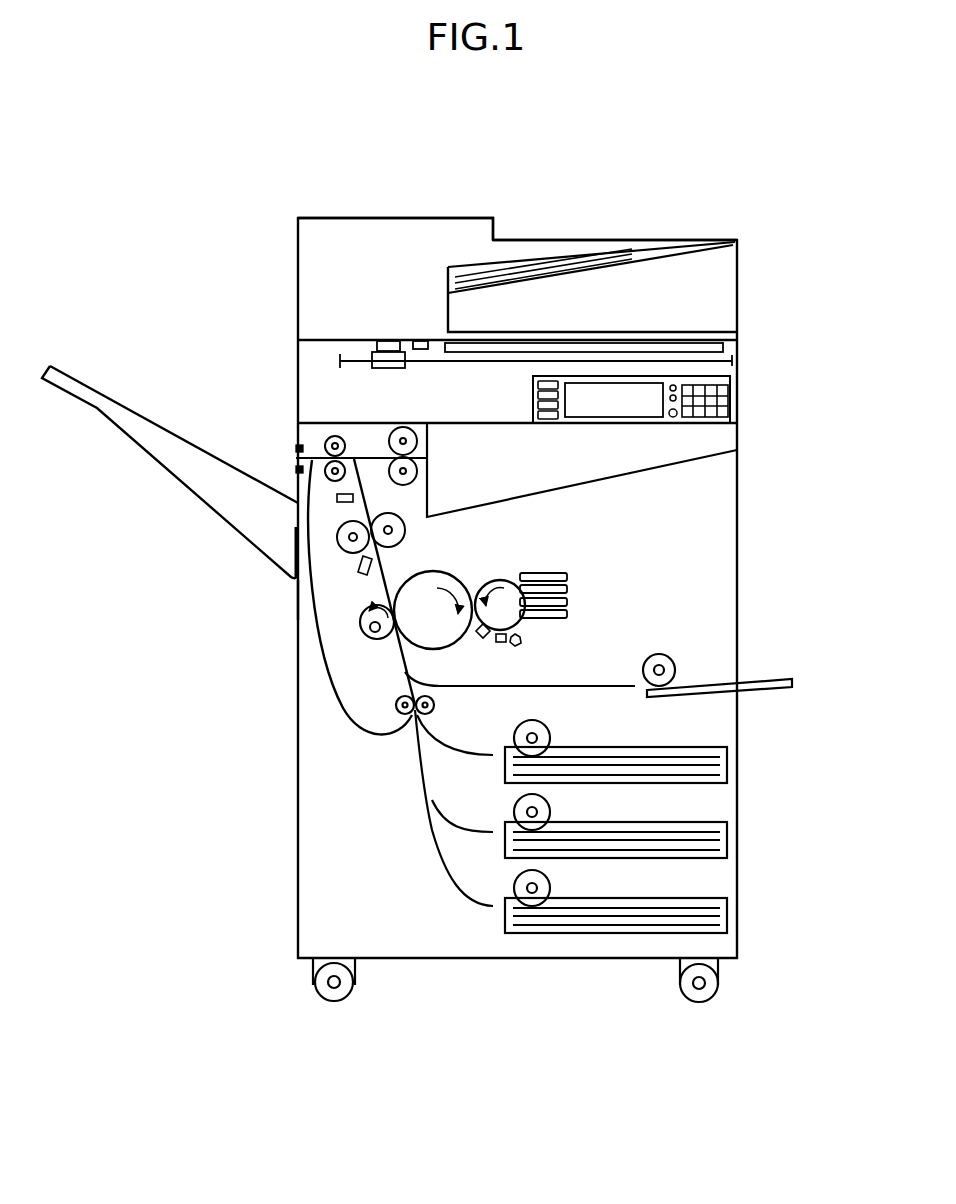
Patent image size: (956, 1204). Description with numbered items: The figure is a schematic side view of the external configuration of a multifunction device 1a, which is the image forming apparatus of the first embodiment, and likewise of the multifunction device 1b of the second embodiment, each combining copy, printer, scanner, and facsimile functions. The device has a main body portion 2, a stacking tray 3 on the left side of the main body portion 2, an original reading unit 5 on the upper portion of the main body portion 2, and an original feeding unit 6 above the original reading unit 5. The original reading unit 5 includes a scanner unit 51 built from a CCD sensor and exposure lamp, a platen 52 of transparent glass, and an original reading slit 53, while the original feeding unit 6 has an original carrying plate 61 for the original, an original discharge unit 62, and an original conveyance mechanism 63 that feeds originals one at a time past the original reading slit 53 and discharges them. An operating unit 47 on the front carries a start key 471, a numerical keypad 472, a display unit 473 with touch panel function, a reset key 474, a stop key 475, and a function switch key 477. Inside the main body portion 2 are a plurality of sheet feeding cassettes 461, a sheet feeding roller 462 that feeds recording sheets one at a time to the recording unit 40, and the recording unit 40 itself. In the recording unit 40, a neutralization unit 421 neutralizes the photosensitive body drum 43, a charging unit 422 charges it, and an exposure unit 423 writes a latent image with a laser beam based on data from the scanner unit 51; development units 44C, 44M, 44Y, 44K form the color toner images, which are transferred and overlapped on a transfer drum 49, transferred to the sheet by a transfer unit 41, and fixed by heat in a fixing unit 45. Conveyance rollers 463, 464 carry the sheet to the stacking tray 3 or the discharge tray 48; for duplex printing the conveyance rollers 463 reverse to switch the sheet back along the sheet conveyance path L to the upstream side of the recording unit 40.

The multifunction device 1a is at (157, 214).
The multifunction device 1b is at (443, 572).
The main body portion 2 is at (716, 601).
The stacking tray 3 is at (213, 523).
The original reading unit 5 is at (320, 368).
The original feeding unit 6 is at (550, 238).
The original carrying plate 61 is at (654, 244).
The original discharge unit 62 is at (669, 332).
The original conveyance mechanism 63 is at (379, 294).
The recording unit 40 is at (343, 611).
The transfer unit 41 is at (368, 637).
The photosensitive body drum 43 is at (511, 589).
The fixing unit 45 is at (355, 549).
The operating unit 47 is at (746, 403).
The discharge tray 48 is at (656, 484).
The transfer drum 49 is at (426, 583).
The scanner unit 51 is at (394, 369).
The platen 52 is at (725, 346).
The original reading slit 53 is at (385, 344).
The neutralization unit 421 is at (480, 637).
The charging unit 422 is at (500, 646).
The exposure unit 423 is at (519, 644).
The development unit 44C is at (570, 577).
The development unit 44M is at (570, 589).
The development unit 44Y is at (570, 602).
The development unit 44K is at (570, 615).
The sheet feeding cassettes 461 is at (727, 773).
The sheet feeding roller 462 is at (551, 740).
The conveyance rollers 463 is at (390, 430).
The conveyance rollers 464 is at (325, 440).
The start key 471 is at (670, 418).
The numerical keypad 472 is at (689, 418).
The display unit 473 is at (590, 400).
The reset key 474 is at (676, 386).
The stop key 475 is at (671, 386).
The function switch key 477 is at (533, 407).
The sheet conveyance path L is at (304, 598).